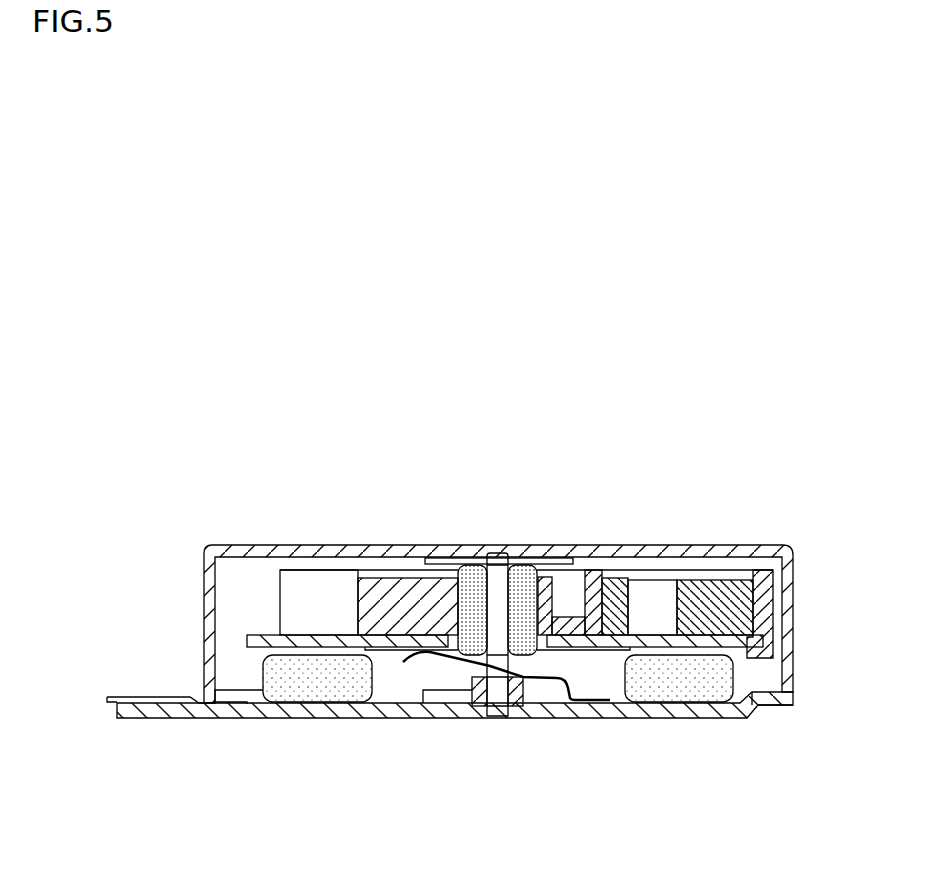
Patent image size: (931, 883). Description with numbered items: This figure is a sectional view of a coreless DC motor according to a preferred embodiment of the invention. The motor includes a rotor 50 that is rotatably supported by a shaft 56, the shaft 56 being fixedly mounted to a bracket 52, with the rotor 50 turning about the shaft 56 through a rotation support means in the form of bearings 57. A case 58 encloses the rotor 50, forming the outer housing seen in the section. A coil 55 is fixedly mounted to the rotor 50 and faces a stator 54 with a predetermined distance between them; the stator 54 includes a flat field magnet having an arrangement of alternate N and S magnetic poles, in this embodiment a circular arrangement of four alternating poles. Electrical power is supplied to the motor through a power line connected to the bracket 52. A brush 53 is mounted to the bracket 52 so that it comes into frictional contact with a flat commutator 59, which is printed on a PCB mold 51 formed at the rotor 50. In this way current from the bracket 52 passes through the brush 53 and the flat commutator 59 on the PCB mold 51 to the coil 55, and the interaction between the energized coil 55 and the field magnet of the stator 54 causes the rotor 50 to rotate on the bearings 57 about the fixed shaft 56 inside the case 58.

The rotor 50 is at (288, 610).
The PCB mold 51 is at (257, 638).
The bracket 52 is at (257, 718).
The brush 53 is at (420, 660).
The stator 54 is at (682, 698).
The coil 55 is at (740, 615).
The shaft 56 is at (522, 557).
The bearings 57 is at (443, 552).
The case 58 is at (308, 552).
The flat commutator 59 is at (390, 650).